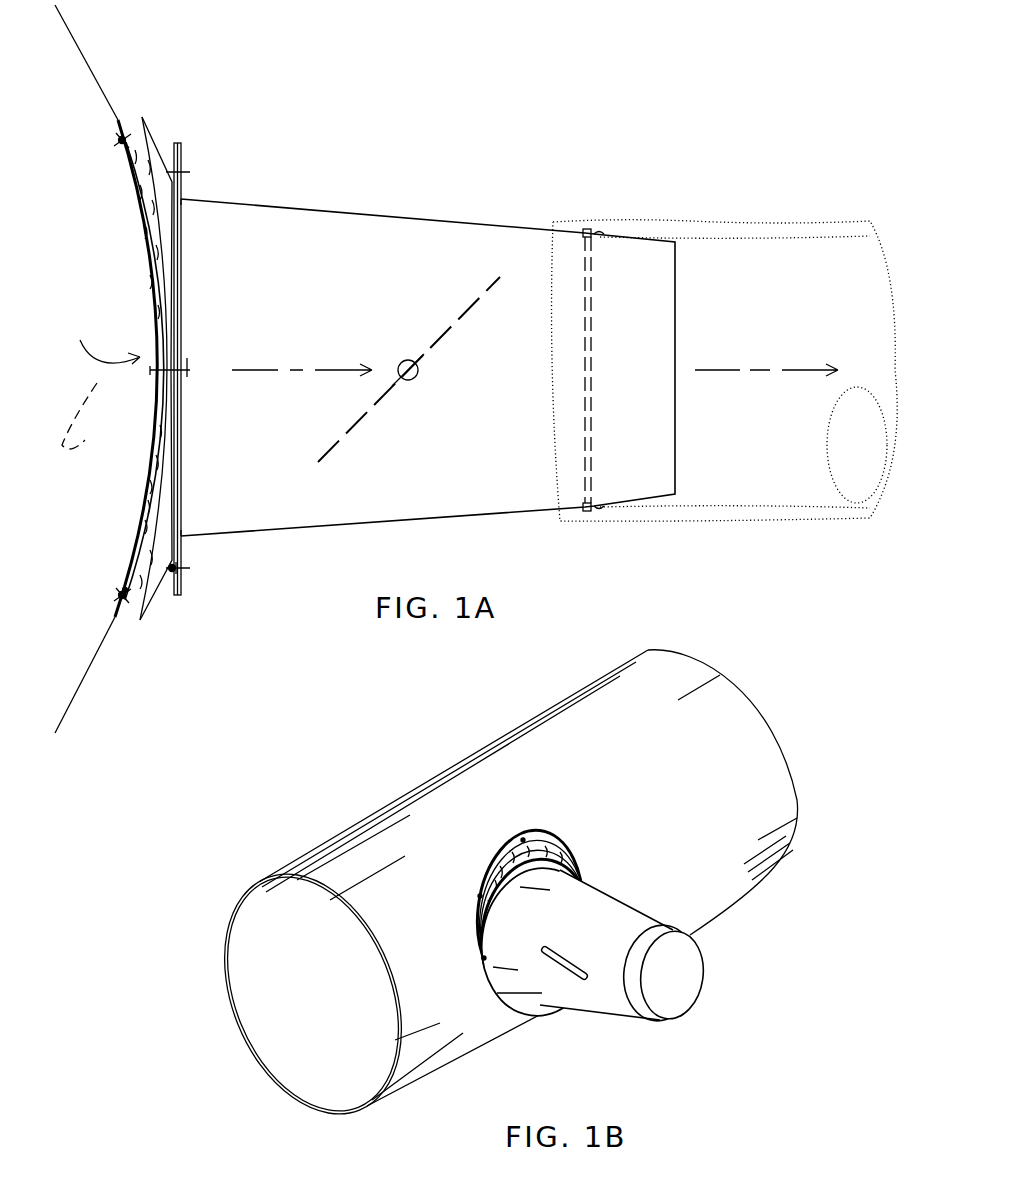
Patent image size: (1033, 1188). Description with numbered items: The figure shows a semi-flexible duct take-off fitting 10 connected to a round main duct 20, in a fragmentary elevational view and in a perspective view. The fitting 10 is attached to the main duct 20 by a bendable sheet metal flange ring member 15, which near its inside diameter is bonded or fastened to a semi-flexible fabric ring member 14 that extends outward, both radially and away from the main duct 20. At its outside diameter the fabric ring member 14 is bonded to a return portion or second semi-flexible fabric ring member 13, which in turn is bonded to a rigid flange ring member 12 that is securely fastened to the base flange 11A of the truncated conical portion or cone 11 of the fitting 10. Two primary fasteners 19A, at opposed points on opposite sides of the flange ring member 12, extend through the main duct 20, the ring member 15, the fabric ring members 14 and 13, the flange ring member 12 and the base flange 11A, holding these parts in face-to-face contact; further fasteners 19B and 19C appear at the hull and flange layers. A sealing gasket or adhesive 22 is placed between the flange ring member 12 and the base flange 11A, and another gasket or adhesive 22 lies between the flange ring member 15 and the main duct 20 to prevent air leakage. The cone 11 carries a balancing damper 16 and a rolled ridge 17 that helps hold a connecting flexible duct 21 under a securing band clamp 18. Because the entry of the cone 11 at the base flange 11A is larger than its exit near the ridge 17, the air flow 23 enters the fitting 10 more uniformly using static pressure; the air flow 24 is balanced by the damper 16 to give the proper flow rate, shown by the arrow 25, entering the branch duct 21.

In FIG. 1A, the semi-flexible duct take-off fitting 10 is at (525, 548).
In FIG. 1B, the semi-flexible duct take-off fitting 10 is at (625, 1046).
In FIG. 1A, the truncated conical portion 11 is at (228, 200).
In FIG. 1B, the truncated conical portion 11 is at (575, 1012).
In FIG. 1A, the base flange 11A is at (187, 553).
In FIG. 1B, the base flange 11A is at (586, 884).
In FIG. 1A, the rigid flange ring member 12 is at (172, 143).
In FIG. 1B, the rigid flange ring member 12 is at (590, 867).
In FIG. 1A, the semi-flexible fabric ring member 13 is at (168, 147).
In FIG. 1B, the semi-flexible fabric ring member 13 is at (572, 853).
In FIG. 1A, the semi-flexible fabric ring member 14 is at (128, 145).
In FIG. 1B, the semi-flexible fabric ring member 14 is at (557, 845).
In FIG. 1A, the bendable sheet metal flange ring member 15 is at (117, 118).
In FIG. 1B, the bendable sheet metal flange ring member 15 is at (541, 831).
In FIG. 1A, the balancing damper 16 is at (477, 302).
In FIG. 1A, the rolled ridge 17 is at (603, 231).
In FIG. 1A, the securing band clamp 18 is at (585, 229).
In FIG. 1A, the primary fastener 19A is at (188, 370).
In FIG. 1B, the primary fastener 19A is at (481, 957).
In FIG. 1A, the fastener 19B is at (128, 598).
In FIG. 1B, the fastener 19B is at (520, 837).
In FIG. 1A, the fastener 19C is at (188, 575).
In FIG. 1B, the fastener 19C is at (477, 894).
In FIG. 1A, the round main duct 20 is at (82, 683).
In FIG. 1B, the round main duct 20 is at (430, 1045).
In FIG. 1A, the connecting flexible duct 21 is at (737, 222).
In FIG. 1A, the sealing gasket or adhesive 22 is at (178, 597).
In FIG. 1A, the air flow 23 is at (95, 388).
In FIG. 1A, the air flow 24 is at (300, 365).
In FIG. 1B, the air flow 24 is at (567, 952).
In FIG. 1A, the arrow indicating flow rate 25 is at (778, 365).